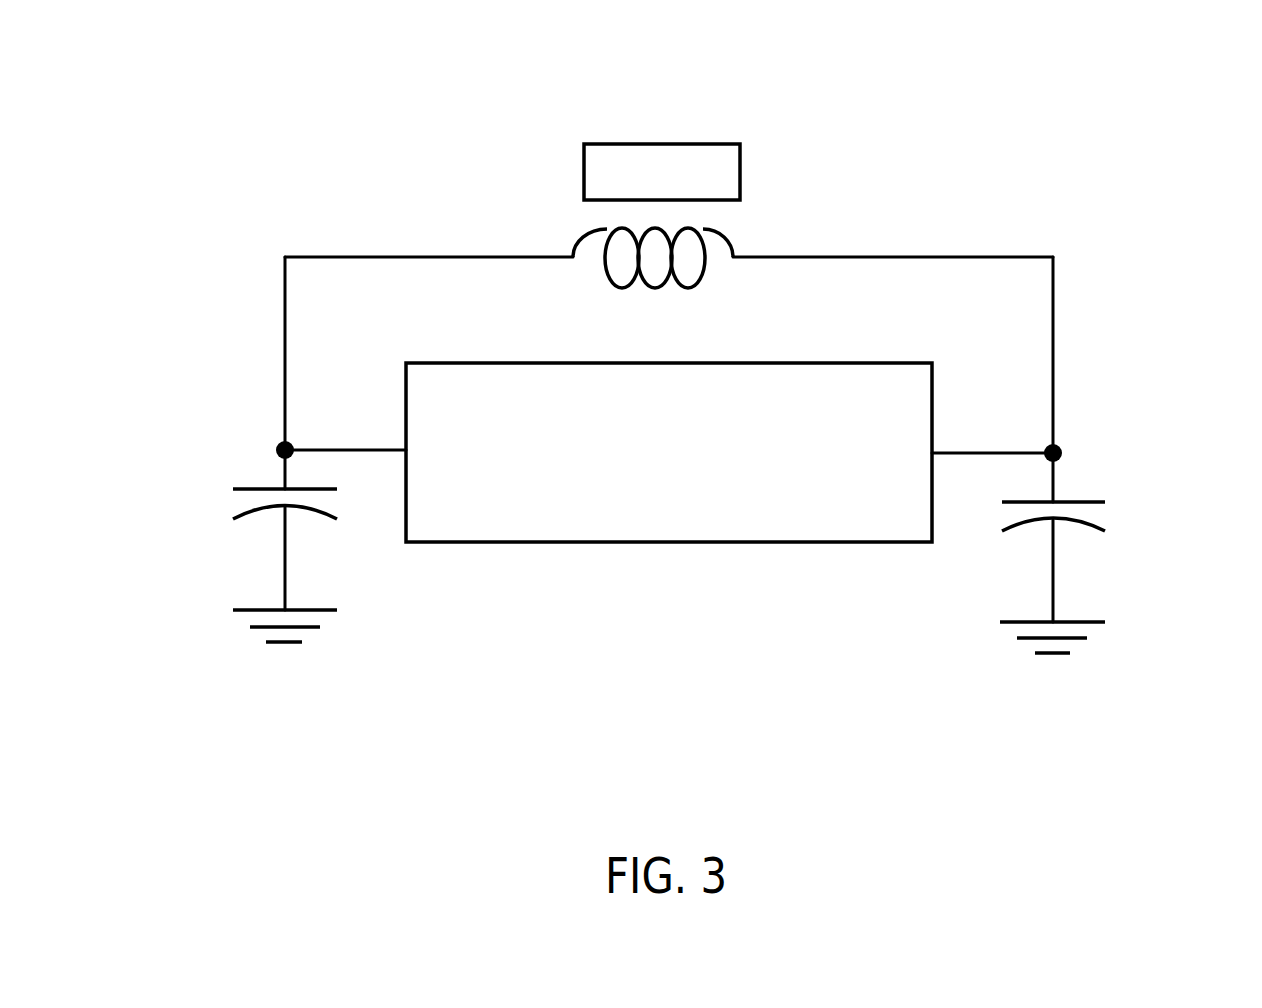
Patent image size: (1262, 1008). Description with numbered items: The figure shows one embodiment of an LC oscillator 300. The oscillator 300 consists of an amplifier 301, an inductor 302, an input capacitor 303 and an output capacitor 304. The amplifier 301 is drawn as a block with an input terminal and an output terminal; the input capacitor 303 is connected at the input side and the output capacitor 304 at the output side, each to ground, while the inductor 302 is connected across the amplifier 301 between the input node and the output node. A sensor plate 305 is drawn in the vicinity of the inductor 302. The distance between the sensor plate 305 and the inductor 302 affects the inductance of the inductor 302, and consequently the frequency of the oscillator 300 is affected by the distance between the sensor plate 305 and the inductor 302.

The LC oscillator 300 is at (370, 65).
The amplifier 301 is at (730, 530).
The inductor 302 is at (705, 273).
The input capacitor 303 is at (257, 478).
The output capacitor 304 is at (1080, 477).
The sensor plate 305 is at (855, 143).